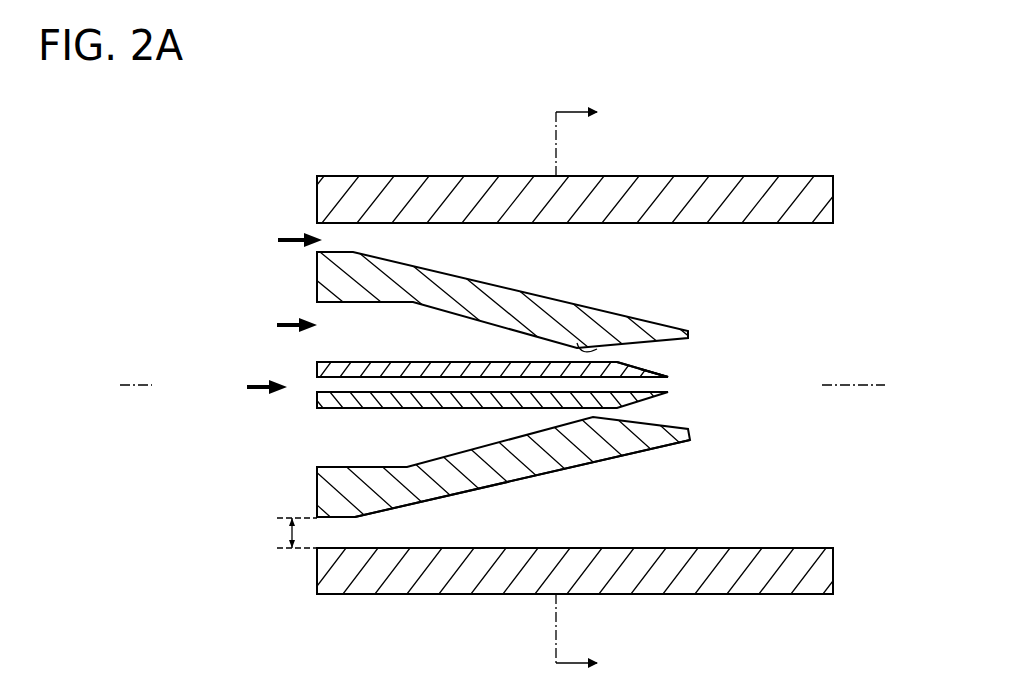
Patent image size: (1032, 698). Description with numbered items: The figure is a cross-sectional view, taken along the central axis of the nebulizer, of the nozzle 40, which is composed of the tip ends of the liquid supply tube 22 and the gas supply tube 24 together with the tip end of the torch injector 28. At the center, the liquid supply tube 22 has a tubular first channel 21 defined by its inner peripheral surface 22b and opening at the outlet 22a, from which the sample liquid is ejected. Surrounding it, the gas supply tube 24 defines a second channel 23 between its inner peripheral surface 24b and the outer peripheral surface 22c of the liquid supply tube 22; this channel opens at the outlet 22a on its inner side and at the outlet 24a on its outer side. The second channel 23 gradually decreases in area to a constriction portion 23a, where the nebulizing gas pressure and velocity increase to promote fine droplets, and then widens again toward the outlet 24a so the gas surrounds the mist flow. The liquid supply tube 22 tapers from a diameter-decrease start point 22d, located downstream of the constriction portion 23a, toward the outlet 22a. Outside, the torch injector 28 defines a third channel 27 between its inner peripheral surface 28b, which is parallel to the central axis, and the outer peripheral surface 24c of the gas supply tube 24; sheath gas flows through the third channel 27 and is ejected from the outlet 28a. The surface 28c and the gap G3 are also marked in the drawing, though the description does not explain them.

The nozzle 40 is at (251, 96).
The torch injector 28 is at (322, 204).
The outlet of the torch injector 28a is at (834, 200).
The inner peripheral surface of the torch injector 28b is at (458, 547).
The bottom surface of housing 28c is at (643, 595).
The third channel 27 is at (325, 232).
The gas supply tube 24 is at (327, 282).
The outlet of the gas supply tube 24a is at (690, 335).
The inner peripheral surface of the gas supply tube 24b is at (645, 419).
The outer peripheral surface of the gas supply tube 24c is at (418, 503).
The second channel 23 is at (320, 435).
The constriction portion 23a is at (577, 343).
The liquid supply tube 22 is at (317, 370).
The outlet of the liquid supply tube 22a is at (669, 378).
The inner peripheral surface of the liquid supply tube 22b is at (628, 387).
The outer peripheral surface of the liquid supply tube 22c is at (349, 361).
The diameter-decrease start point 22d is at (617, 360).
The first channel 21 is at (317, 391).
The gap dimension G3 is at (290, 536).